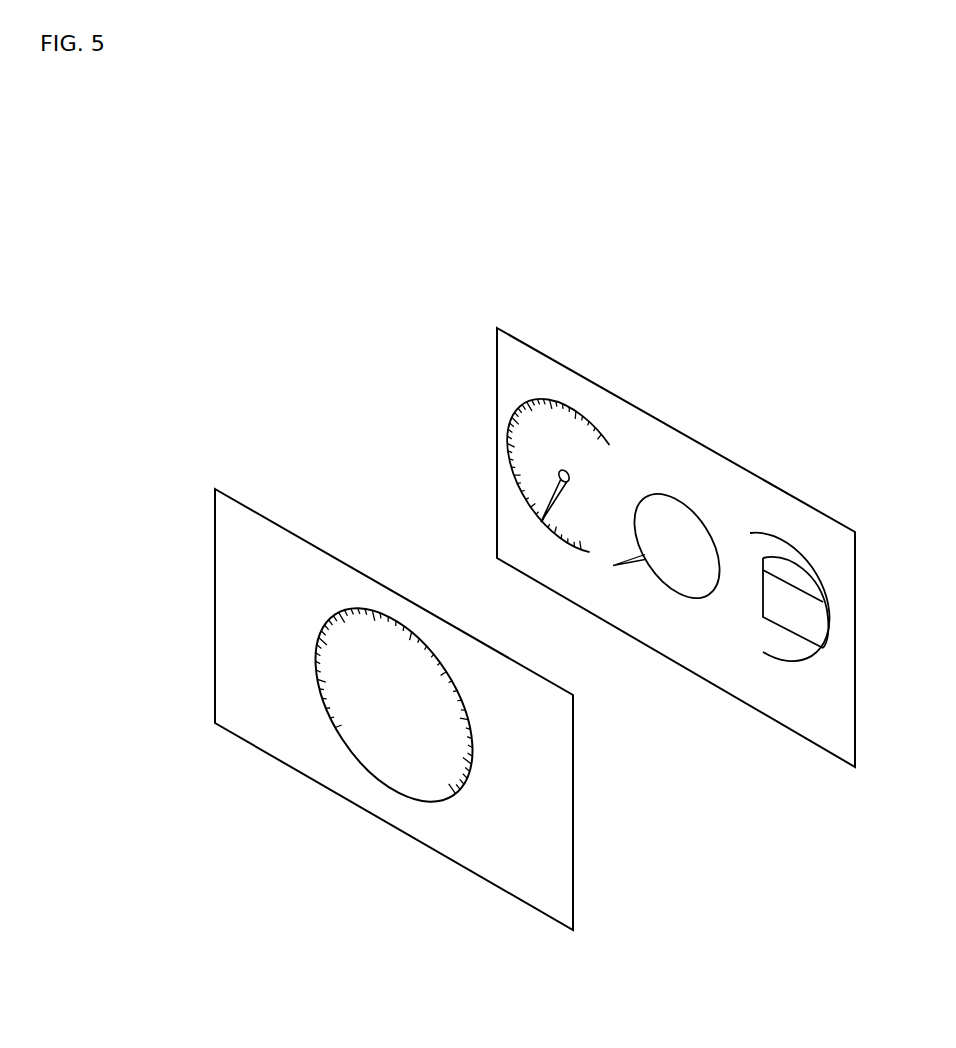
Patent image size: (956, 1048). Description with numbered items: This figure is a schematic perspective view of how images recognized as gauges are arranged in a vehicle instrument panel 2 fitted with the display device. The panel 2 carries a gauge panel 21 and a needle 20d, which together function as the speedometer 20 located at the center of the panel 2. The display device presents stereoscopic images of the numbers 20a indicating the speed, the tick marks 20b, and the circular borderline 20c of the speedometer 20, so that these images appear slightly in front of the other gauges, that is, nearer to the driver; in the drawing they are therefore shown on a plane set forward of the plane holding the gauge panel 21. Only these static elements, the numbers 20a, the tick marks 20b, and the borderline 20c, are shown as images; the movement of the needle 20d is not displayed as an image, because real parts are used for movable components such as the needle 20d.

The instrument panel 2 is at (749, 258).
The speedometer 20 is at (379, 791).
The numbers 20a is at (344, 694).
The tick marks 20b is at (458, 793).
The circular borderline 20c is at (468, 772).
The needle 20d is at (630, 565).
The gauge panel 21 is at (800, 522).